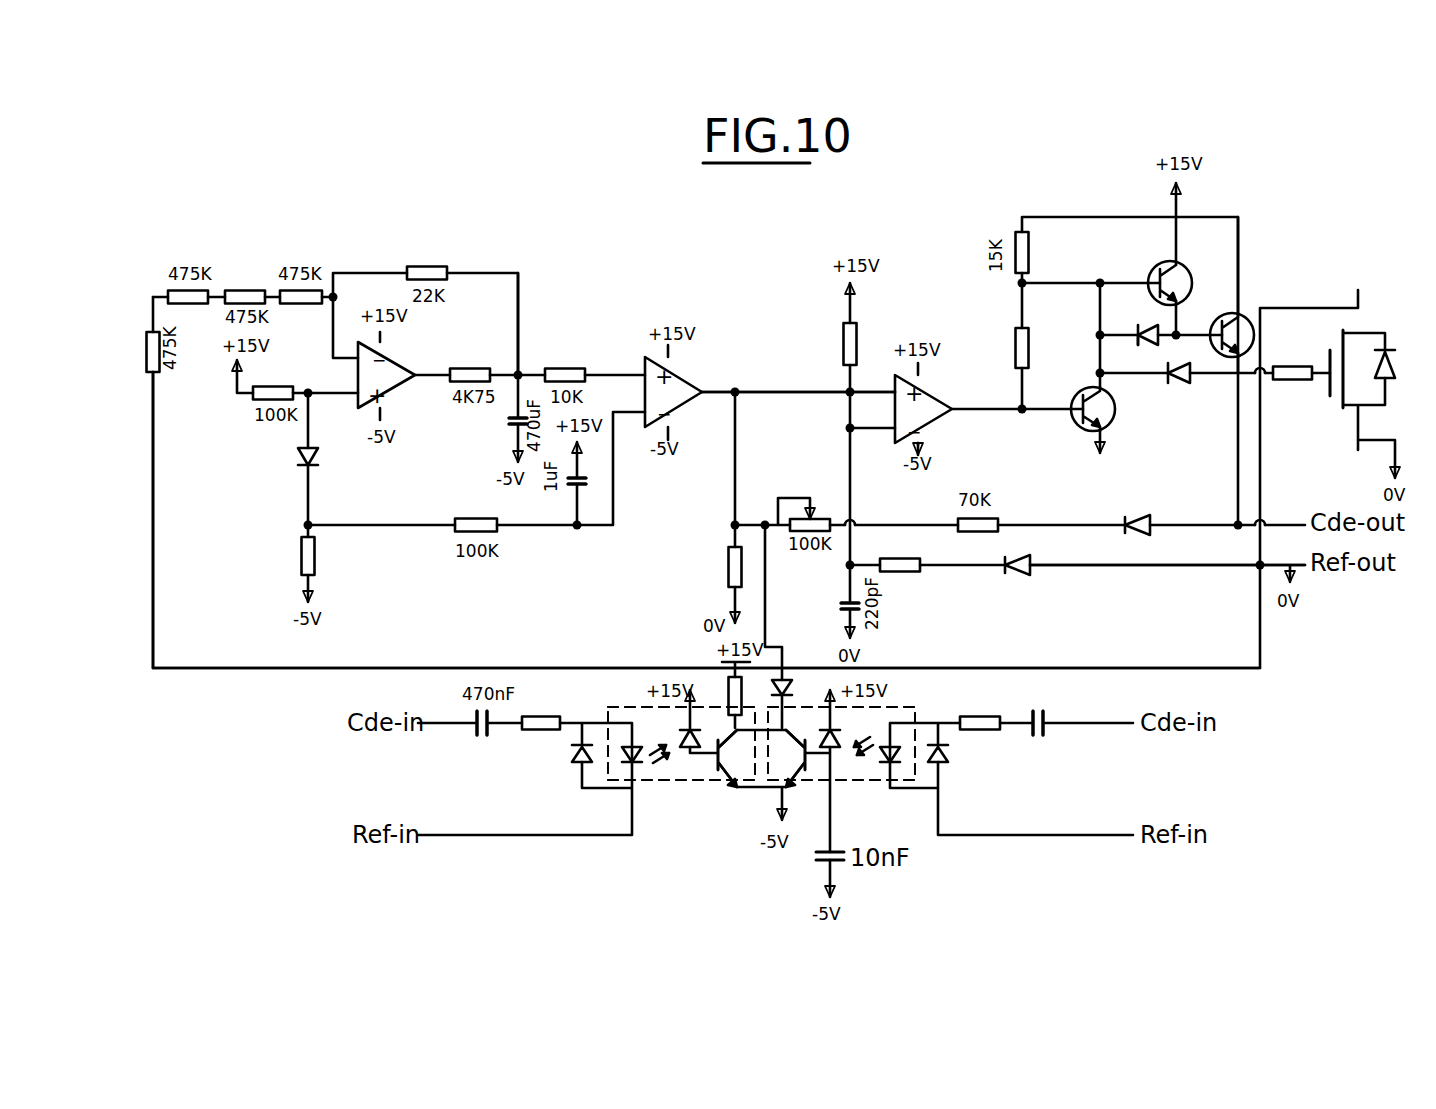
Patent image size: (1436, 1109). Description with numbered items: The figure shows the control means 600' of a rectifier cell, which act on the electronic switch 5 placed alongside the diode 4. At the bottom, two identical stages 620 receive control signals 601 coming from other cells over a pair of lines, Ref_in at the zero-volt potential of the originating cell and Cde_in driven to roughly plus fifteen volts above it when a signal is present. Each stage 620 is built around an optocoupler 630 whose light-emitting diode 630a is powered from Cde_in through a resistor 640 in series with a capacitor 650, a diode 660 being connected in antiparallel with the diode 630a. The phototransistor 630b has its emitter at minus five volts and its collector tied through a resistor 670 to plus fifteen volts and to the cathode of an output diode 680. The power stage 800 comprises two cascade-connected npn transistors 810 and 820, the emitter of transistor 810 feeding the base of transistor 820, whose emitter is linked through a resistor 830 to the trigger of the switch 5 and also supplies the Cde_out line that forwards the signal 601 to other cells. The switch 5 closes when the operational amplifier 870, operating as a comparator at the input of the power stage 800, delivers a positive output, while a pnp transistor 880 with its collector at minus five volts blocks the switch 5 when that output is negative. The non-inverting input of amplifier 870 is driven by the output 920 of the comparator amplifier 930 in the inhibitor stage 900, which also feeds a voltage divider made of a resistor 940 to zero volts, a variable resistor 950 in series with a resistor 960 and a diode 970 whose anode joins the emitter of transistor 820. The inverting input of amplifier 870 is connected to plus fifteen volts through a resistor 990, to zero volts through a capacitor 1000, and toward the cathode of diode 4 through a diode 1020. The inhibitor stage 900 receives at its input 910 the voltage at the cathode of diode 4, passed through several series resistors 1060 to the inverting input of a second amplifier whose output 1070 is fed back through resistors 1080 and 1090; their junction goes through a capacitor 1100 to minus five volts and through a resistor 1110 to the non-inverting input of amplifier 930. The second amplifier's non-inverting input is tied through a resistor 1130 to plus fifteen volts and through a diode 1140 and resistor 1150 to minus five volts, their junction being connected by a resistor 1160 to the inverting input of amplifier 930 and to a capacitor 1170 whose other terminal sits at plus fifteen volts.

The resistors 1060 is at (175, 290).
The resistor 1080 is at (425, 268).
The output of the operational amplifier 1070 is at (437, 374).
The resistor 1090 is at (468, 370).
The resistor 1110 is at (560, 370).
The resistor 1130 is at (278, 390).
The capacitor 1100 is at (508, 418).
The diode 1140 is at (298, 451).
The resistor 1150 is at (303, 552).
The resistor 1160 is at (472, 518).
The capacitor 1170 is at (586, 492).
The input 910 is at (152, 467).
The inhibitor stage 900 is at (527, 281).
The operational amplifier 930 is at (680, 405).
The output 920 is at (718, 389).
The resistor 940 is at (724, 566).
The variable resistor 950 is at (817, 517).
The resistor 960 is at (957, 520).
The resistor 990 is at (845, 347).
The capacitor 1000 is at (842, 597).
The diode 1020 is at (1017, 576).
The diode 970 is at (1137, 515).
The operational amplifier 870 is at (922, 397).
The power stage 800 is at (1038, 216).
The transistor 810 is at (1150, 278).
The transistor 820 is at (1236, 320).
The pnp type transistor 880 is at (1117, 414).
The resistor 830 is at (1284, 381).
The electronic switch 5 is at (1322, 358).
The diode 4 is at (1387, 350).
The control signal 601 is at (1348, 570).
The control means 600' is at (706, 770).
The stages 620 is at (567, 850).
The light-emitting diode 630a is at (622, 783).
The phototransistor 630b is at (715, 765).
The optocoupler 630 is at (845, 775).
The resistor 640 is at (543, 716).
The capacitor 650 is at (475, 736).
The diode 660 is at (572, 755).
The resistor 670 is at (728, 683).
The output diode 680 is at (793, 677).